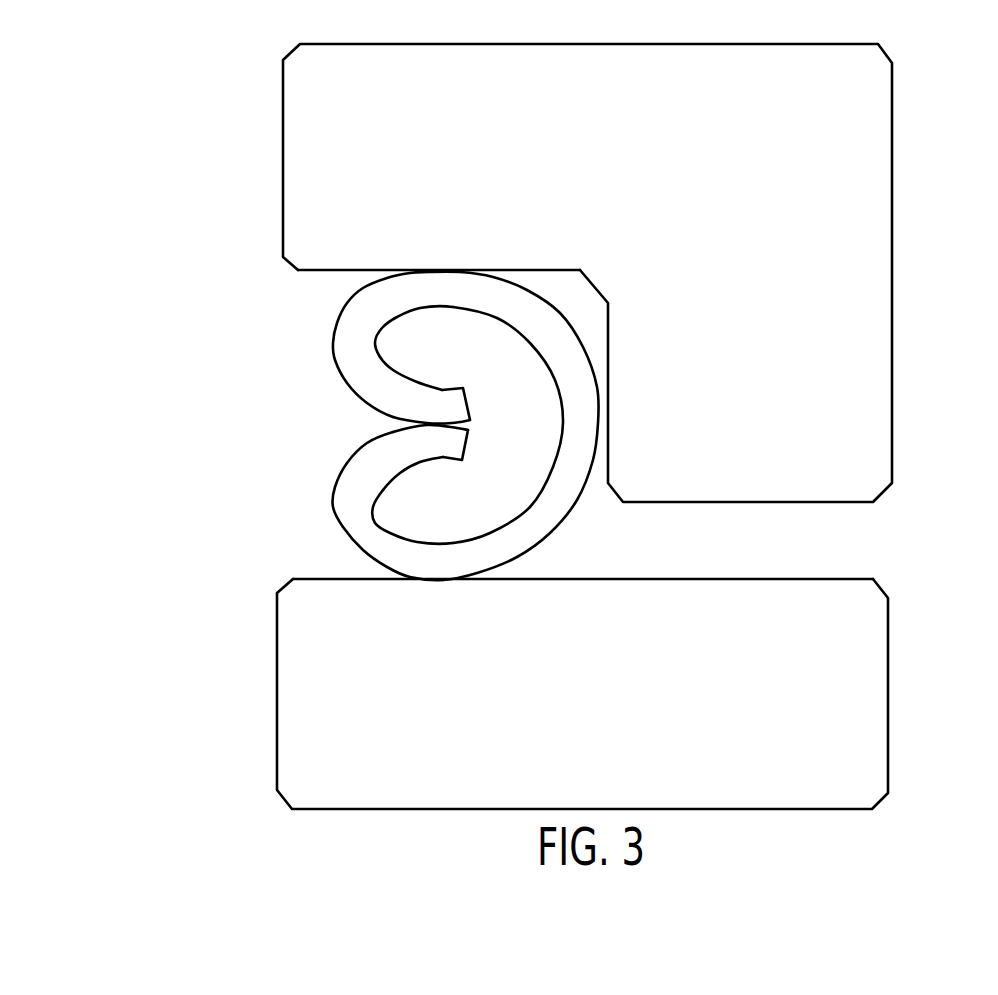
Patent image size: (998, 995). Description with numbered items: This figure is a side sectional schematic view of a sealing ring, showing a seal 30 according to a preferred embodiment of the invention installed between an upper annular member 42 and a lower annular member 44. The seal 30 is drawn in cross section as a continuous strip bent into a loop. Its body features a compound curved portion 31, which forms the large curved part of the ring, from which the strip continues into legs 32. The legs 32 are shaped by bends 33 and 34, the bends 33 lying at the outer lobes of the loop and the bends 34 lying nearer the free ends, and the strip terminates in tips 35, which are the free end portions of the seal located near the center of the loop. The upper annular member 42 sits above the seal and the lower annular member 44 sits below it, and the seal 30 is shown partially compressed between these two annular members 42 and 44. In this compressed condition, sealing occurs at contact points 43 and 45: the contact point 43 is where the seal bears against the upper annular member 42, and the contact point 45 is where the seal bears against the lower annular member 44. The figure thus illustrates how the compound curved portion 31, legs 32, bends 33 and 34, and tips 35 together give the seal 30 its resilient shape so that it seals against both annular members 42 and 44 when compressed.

The seal 30 is at (241, 423).
The compound curved portion 31 is at (558, 505).
The legs 32 is at (408, 380).
The bends 33 is at (353, 357).
The bends 34 is at (442, 392).
The tips 35 is at (460, 406).
The upper annular member 42 is at (880, 275).
The contact point 43 is at (393, 272).
The lower annular member 44 is at (877, 710).
The contact point 45 is at (387, 577).